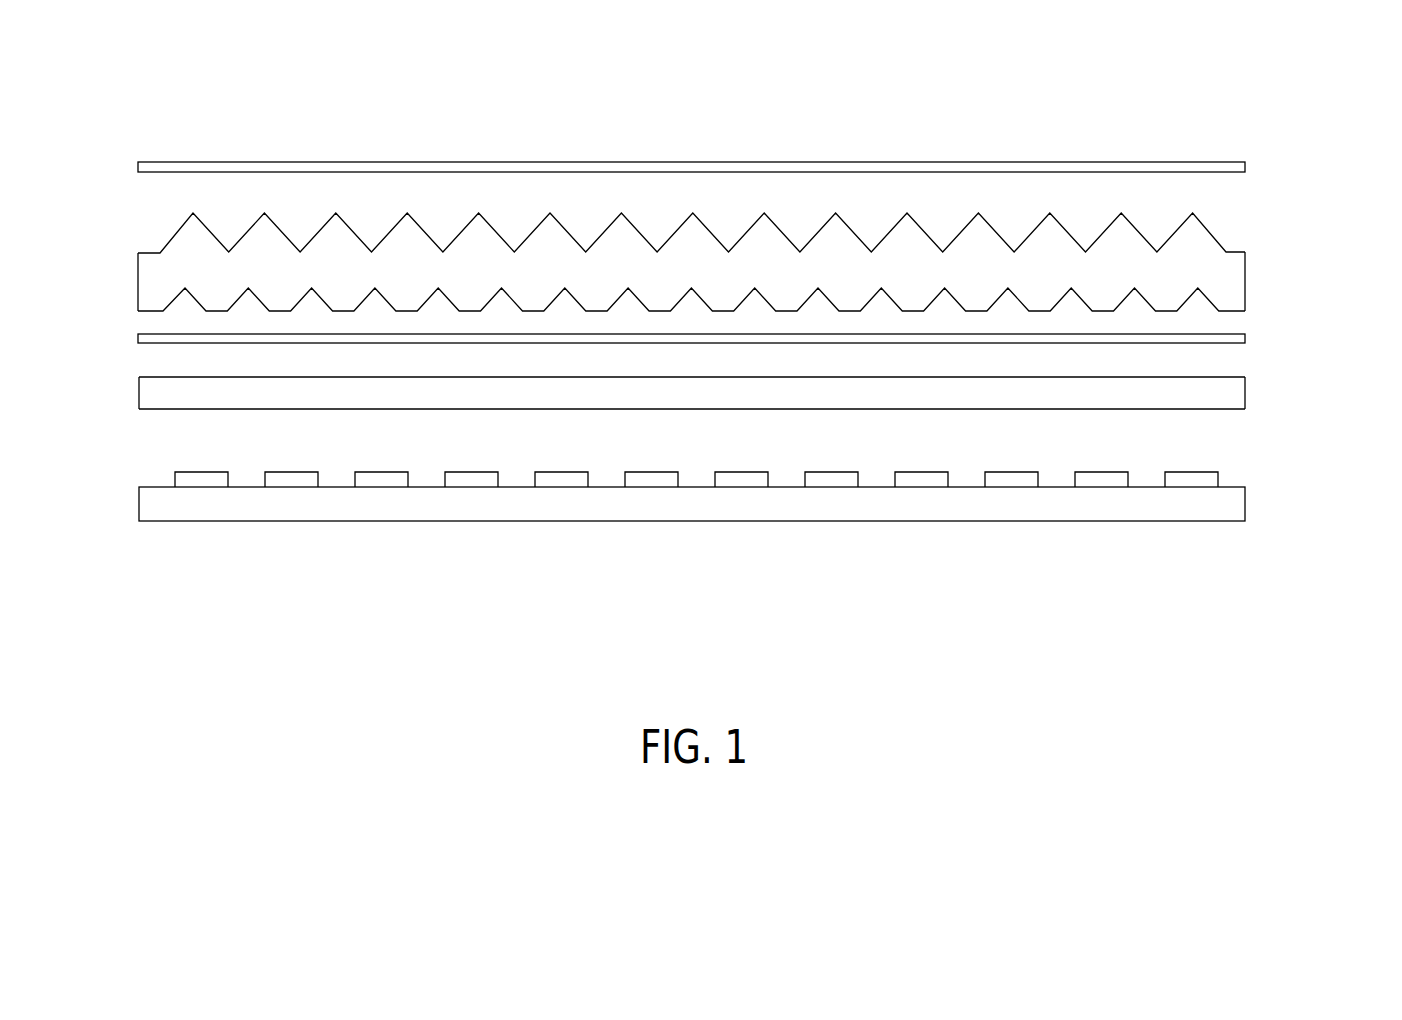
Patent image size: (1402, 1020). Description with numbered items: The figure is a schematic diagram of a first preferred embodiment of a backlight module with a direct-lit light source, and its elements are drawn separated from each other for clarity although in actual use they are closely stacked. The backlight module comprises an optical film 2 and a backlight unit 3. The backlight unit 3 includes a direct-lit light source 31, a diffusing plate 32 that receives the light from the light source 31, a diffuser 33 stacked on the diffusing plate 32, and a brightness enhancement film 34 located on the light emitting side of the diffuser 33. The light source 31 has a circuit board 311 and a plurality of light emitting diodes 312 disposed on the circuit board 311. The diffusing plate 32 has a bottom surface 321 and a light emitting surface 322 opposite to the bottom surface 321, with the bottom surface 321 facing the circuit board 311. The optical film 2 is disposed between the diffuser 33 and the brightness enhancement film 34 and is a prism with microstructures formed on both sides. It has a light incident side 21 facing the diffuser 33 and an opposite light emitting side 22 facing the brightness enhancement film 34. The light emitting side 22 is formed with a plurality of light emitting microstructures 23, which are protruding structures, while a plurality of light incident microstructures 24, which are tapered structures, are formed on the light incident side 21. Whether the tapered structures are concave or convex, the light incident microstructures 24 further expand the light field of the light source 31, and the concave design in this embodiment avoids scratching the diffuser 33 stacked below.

The optical film 2 is at (759, 268).
The light incident side 21 is at (759, 343).
The light emitting side 22 is at (759, 195).
The light emitting microstructures 23 is at (1135, 226).
The light incident microstructures 24 is at (998, 302).
The backlight unit 3 is at (755, 534).
The direct-lit light source 31 is at (692, 546).
The circuit board 311 is at (1065, 510).
The light emitting diodes 312 is at (832, 478).
The diffusing plate 32 is at (631, 411).
The bottom surface 321 is at (177, 411).
The light emitting surface 322 is at (177, 375).
The diffuser 33 is at (137, 338).
The brightness enhancement film 34 is at (137, 170).